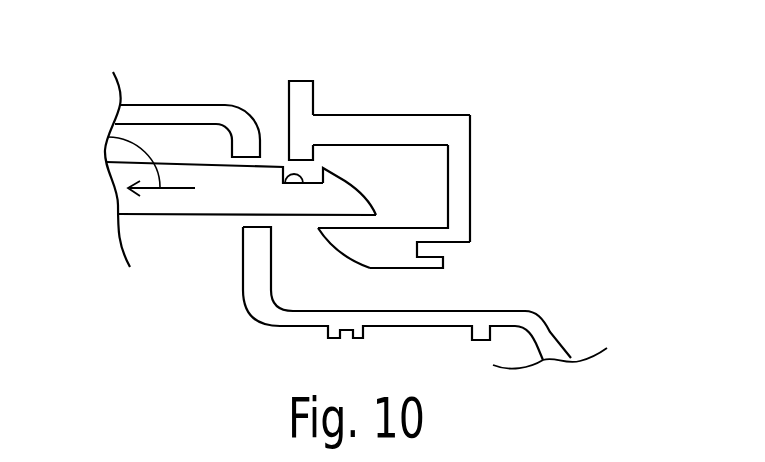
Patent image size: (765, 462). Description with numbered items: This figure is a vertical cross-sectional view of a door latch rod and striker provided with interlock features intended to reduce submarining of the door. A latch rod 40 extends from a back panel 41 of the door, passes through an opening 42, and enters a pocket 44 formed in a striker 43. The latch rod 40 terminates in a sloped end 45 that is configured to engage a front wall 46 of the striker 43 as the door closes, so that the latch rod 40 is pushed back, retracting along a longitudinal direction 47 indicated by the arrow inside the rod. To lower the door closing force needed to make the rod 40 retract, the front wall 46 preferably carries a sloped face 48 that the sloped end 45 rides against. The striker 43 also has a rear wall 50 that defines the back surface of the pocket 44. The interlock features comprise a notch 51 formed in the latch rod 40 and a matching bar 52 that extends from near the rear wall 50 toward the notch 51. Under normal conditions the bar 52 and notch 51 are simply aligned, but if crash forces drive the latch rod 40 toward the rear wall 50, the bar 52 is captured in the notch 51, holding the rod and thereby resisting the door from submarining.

The latch rod 40 is at (178, 207).
The back panel 41 is at (162, 105).
The opening 42 is at (255, 224).
The striker 43 is at (484, 126).
The pocket 44 is at (410, 175).
The sloped end 45 is at (370, 197).
The front wall 46 is at (416, 269).
The longitudinal direction 47 is at (109, 138).
The sloped face 48 is at (343, 253).
The rear wall 50 is at (375, 125).
The notch 51 is at (283, 178).
The bar 52 is at (288, 150).